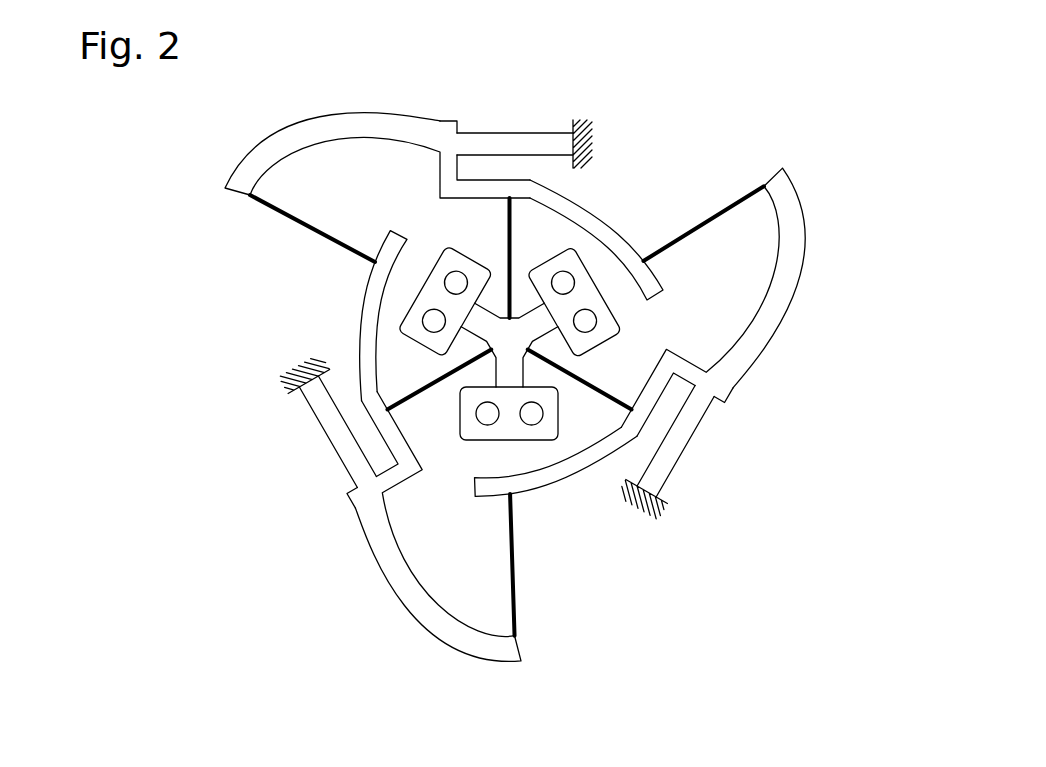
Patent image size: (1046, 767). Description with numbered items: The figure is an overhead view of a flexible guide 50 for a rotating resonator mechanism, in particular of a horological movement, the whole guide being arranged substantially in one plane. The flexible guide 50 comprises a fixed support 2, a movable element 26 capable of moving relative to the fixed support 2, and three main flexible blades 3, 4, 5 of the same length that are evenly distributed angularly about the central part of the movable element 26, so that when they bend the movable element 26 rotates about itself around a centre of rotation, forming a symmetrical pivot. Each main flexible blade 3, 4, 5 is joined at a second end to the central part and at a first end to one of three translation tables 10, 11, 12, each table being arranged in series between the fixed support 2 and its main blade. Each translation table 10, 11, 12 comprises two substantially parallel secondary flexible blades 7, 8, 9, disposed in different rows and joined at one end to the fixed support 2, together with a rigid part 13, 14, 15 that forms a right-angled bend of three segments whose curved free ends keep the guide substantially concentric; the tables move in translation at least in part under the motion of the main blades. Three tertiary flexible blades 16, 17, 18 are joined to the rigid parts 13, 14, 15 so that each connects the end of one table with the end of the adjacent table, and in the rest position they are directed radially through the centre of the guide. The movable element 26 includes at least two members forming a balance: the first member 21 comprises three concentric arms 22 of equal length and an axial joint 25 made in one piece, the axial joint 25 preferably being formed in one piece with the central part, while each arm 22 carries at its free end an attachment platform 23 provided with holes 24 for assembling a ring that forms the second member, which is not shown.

The fixed support 2 is at (580, 124).
The main flexible blade 3 is at (505, 224).
The main flexible blade 4 is at (565, 372).
The main flexible blade 5 is at (360, 331).
The secondary flexible blade 7 is at (513, 133).
The secondary flexible blade 8 is at (667, 487).
The secondary flexible blade 9 is at (330, 446).
The translation table 10 is at (410, 161).
The translation table 11 is at (742, 404).
The translation table 12 is at (333, 503).
The rigid part 13 is at (405, 124).
The rigid part 14 is at (734, 384).
The rigid part 15 is at (373, 523).
The tertiary flexible blade 16 is at (282, 200).
The tertiary flexible blade 17 is at (735, 205).
The tertiary flexible blade 18 is at (516, 587).
The first member 21 is at (470, 452).
The arms 22 is at (517, 367).
The attachment platform 23 is at (498, 427).
The holes 24 is at (445, 283).
The axial joint 25 is at (560, 318).
The movable element 26 is at (488, 364).
The flexible guide 50 is at (566, 369).